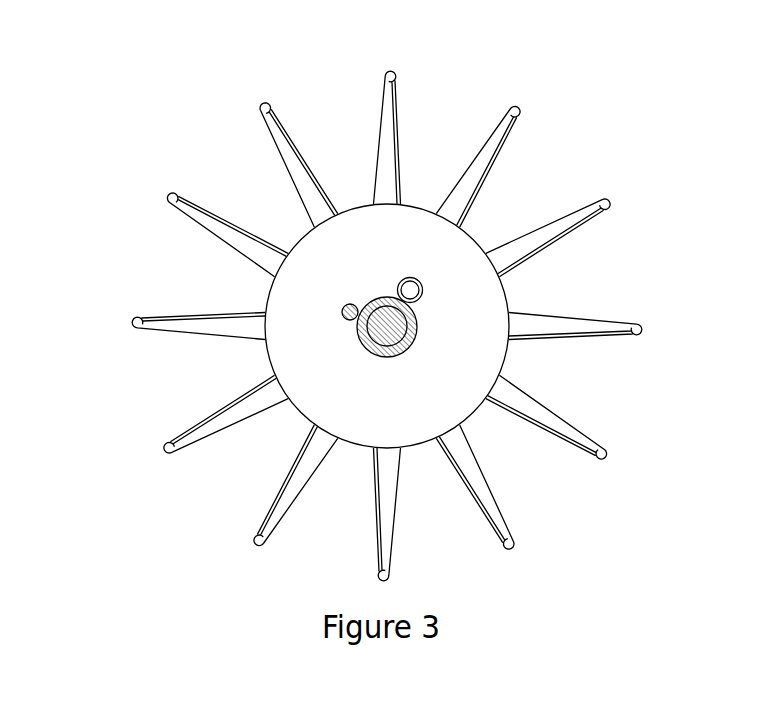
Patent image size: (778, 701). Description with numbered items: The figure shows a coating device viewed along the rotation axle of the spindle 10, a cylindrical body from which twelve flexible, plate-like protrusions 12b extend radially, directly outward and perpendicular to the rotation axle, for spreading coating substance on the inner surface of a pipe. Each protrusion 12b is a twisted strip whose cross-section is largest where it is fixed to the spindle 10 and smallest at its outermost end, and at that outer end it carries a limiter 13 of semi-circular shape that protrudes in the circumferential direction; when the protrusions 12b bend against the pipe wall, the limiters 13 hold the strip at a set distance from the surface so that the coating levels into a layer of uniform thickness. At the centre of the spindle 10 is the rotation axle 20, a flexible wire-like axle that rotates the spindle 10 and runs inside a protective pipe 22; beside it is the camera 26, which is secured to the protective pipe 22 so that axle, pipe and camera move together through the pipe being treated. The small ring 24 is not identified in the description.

The spindle 10 is at (347, 292).
The protrusion 12b is at (235, 115).
The limiter 13 is at (270, 58).
The rotation axle 20 is at (382, 296).
The protective pipe 22 is at (406, 358).
The secondary bore 24 is at (442, 310).
The camera 26 is at (324, 332).